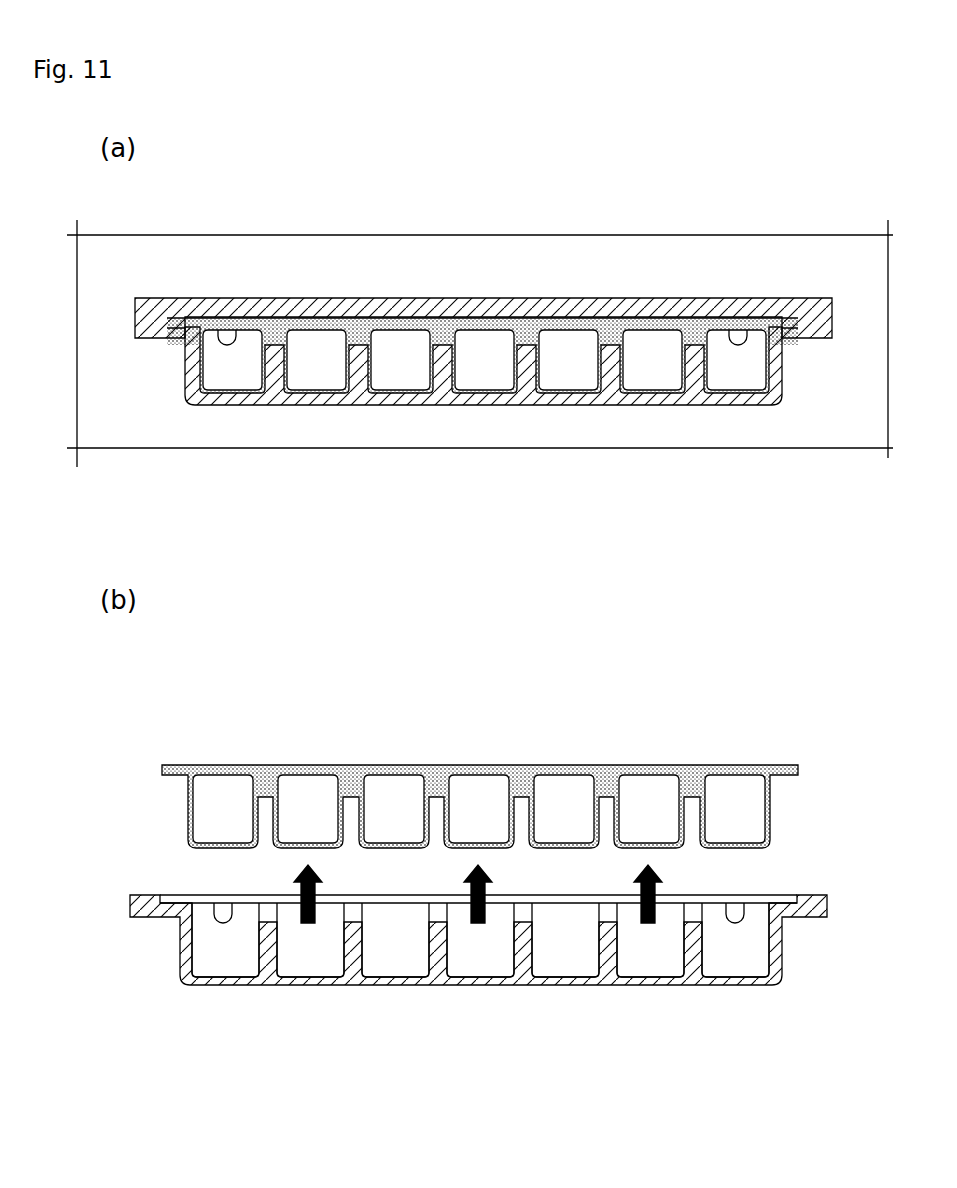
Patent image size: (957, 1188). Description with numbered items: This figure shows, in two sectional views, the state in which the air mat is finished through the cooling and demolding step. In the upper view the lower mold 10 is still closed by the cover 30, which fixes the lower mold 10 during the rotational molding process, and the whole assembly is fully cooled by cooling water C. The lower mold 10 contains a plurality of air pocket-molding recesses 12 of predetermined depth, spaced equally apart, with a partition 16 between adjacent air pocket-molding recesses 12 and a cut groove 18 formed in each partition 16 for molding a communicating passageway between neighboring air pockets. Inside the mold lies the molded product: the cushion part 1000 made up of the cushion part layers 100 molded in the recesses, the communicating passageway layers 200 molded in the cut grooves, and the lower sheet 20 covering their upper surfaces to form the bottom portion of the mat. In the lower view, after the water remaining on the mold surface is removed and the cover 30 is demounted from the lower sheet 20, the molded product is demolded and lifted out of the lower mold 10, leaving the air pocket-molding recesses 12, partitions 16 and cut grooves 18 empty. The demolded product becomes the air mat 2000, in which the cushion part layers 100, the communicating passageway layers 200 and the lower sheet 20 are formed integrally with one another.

The cooling water C is at (456, 256).
The lower mold 10 is at (692, 397).
The air pocket-molding recess 12 is at (746, 951).
The partition 16 is at (600, 953).
The cut groove 18 is at (513, 910).
The lower sheet 20 is at (475, 330).
The cover 30 is at (728, 307).
The cushion part layer 100 is at (565, 386).
The communicating passageway layer 200 is at (587, 337).
The cushion part 1000 is at (540, 493).
The air mat 2000 is at (485, 538).